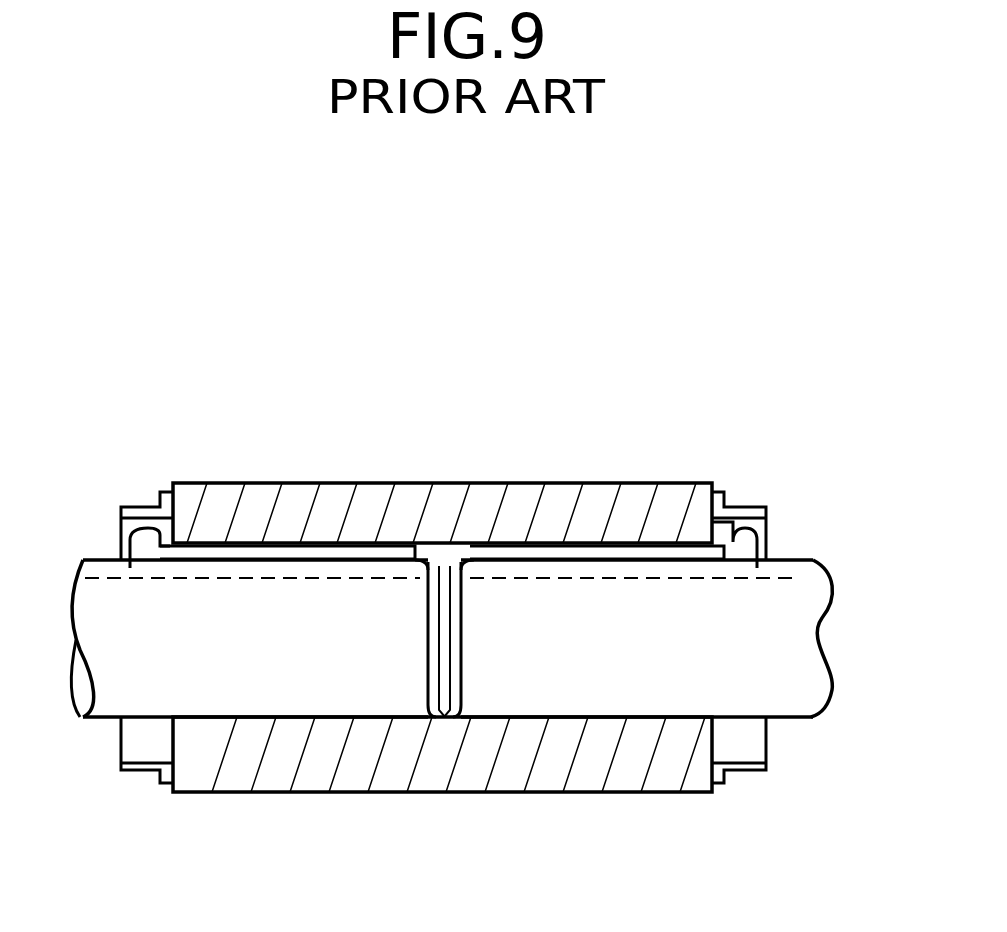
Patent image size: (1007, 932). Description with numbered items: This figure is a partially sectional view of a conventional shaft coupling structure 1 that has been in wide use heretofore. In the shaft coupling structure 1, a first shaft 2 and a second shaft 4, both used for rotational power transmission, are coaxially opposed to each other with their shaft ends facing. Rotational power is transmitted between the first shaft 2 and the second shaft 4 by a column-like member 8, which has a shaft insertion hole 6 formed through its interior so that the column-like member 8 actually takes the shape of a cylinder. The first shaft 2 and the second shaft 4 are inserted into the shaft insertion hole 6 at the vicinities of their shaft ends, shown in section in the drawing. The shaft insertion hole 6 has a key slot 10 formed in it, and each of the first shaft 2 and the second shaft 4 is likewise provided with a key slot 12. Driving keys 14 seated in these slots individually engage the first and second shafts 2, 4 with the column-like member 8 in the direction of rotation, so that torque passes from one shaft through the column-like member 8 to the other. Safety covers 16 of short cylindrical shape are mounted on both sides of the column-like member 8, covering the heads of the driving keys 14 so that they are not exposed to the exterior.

The shaft coupling structure 1 is at (522, 356).
The first shaft 2 is at (760, 635).
The second shaft 4 is at (93, 615).
The shaft insertion hole 6 is at (253, 703).
The column-like member 8 is at (397, 495).
The key slot 10 is at (625, 548).
The key slot 12 is at (563, 577).
The driving key 14 is at (145, 527).
The safety cover 16 is at (142, 770).